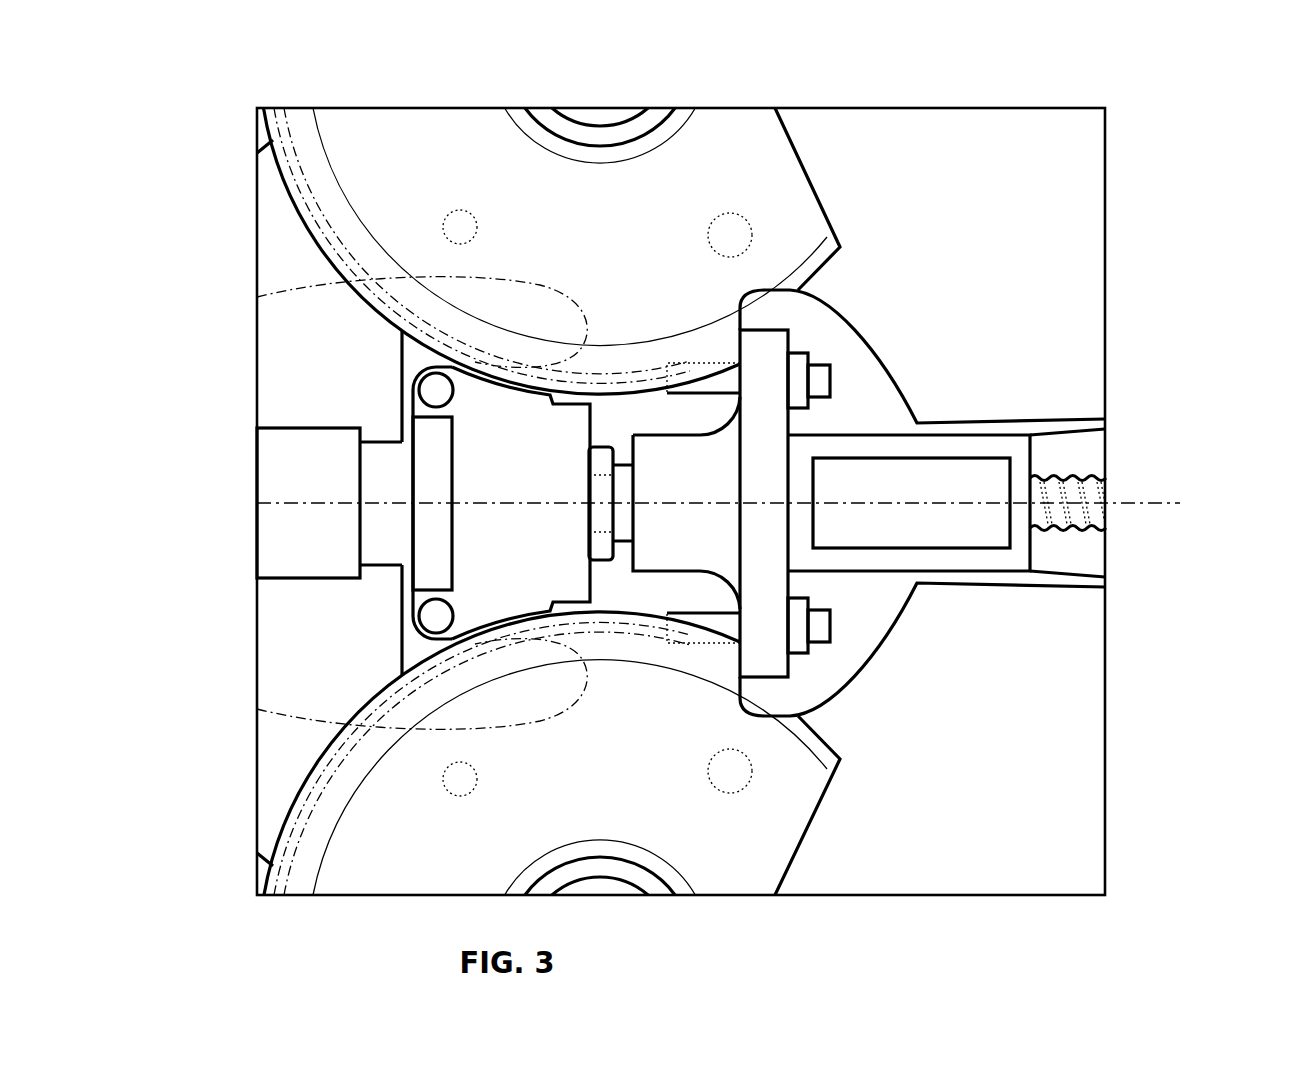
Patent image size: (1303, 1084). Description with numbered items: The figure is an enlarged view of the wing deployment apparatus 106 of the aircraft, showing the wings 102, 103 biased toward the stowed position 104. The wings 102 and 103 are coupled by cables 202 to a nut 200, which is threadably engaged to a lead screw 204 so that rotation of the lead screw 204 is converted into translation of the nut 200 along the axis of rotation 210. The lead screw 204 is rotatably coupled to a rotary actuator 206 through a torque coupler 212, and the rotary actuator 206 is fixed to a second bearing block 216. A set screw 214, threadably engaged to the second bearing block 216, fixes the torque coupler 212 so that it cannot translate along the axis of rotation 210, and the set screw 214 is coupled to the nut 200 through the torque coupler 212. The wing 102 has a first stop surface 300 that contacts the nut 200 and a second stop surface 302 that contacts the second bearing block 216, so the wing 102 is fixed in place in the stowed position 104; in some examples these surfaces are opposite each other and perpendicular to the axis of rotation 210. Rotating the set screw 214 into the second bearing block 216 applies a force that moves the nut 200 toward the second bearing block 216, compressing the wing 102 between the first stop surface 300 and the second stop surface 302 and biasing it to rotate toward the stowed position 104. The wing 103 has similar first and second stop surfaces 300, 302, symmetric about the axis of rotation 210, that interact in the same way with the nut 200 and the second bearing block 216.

The wing 102 is at (1097, 330).
The wing 103 is at (1097, 745).
The stowed position 104 is at (1152, 272).
The wing deployment apparatus 106 is at (236, 606).
The nut 200 is at (792, 667).
The cables 202 is at (335, 248).
The lead screw 204 is at (1083, 530).
The rotary actuator 206 is at (383, 437).
The axis of rotation 210 is at (1167, 498).
The torque coupler 212 is at (632, 463).
The set screw 214 is at (603, 445).
The second bearing block 216 is at (490, 450).
The first stop surface 300 is at (745, 320).
The second stop surface 302 is at (257, 297).